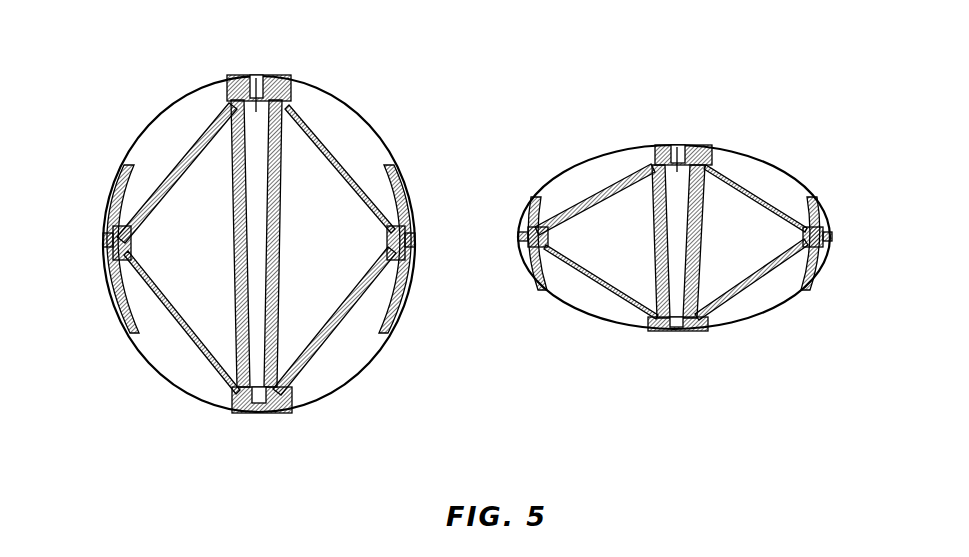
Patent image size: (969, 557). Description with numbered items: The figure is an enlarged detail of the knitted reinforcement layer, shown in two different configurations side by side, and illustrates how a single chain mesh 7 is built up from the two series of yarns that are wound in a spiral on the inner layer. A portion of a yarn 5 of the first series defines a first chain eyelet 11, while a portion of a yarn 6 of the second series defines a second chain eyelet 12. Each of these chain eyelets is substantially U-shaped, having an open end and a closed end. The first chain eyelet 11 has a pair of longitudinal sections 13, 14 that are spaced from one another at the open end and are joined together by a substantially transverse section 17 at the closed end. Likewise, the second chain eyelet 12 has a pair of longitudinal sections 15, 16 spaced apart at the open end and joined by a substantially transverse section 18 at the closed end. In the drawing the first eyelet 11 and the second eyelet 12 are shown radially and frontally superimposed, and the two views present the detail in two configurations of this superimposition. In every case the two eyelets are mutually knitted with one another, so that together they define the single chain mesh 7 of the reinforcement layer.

The yarn of the first series 5 is at (343, 323).
The yarn of the second series 6 is at (177, 328).
The mesh 7 is at (256, 78).
The first chain eyelet 11 is at (226, 148).
The second chain eyelet 12 is at (289, 202).
The longitudinal section 13 is at (240, 347).
The longitudinal section 14 is at (258, 406).
The longitudinal section 15 is at (284, 390).
The longitudinal section 16 is at (278, 358).
The transverse section 17 is at (235, 78).
The transverse section 18 is at (268, 78).